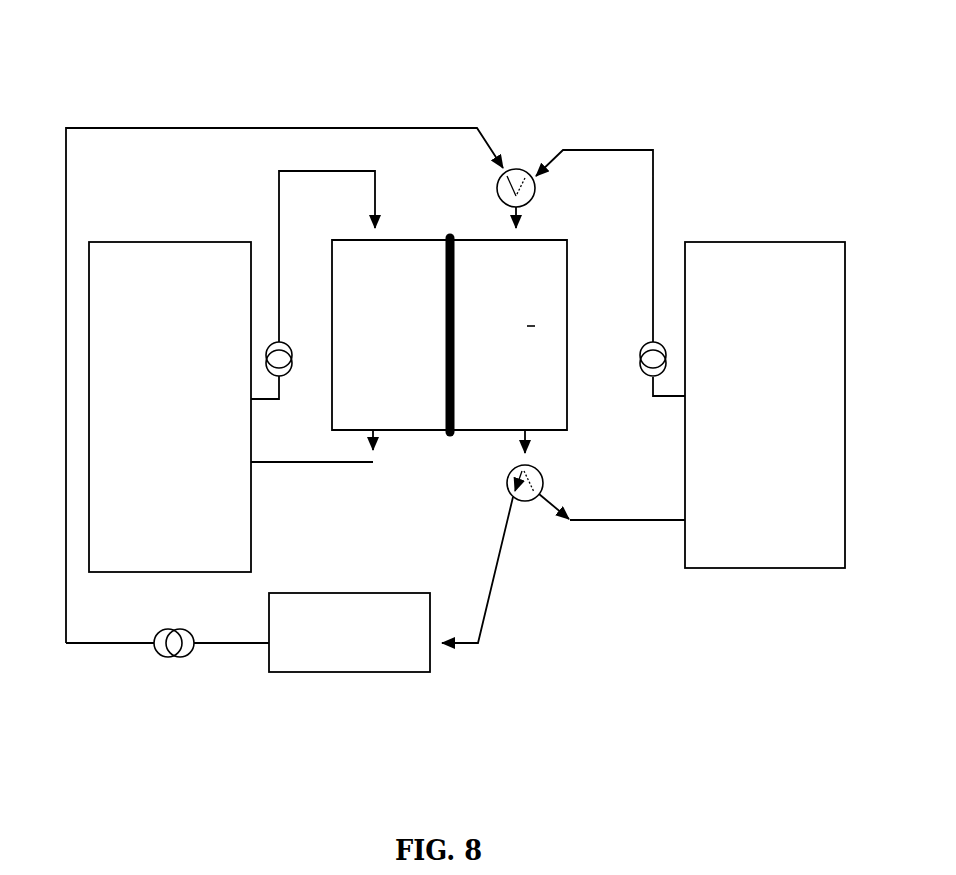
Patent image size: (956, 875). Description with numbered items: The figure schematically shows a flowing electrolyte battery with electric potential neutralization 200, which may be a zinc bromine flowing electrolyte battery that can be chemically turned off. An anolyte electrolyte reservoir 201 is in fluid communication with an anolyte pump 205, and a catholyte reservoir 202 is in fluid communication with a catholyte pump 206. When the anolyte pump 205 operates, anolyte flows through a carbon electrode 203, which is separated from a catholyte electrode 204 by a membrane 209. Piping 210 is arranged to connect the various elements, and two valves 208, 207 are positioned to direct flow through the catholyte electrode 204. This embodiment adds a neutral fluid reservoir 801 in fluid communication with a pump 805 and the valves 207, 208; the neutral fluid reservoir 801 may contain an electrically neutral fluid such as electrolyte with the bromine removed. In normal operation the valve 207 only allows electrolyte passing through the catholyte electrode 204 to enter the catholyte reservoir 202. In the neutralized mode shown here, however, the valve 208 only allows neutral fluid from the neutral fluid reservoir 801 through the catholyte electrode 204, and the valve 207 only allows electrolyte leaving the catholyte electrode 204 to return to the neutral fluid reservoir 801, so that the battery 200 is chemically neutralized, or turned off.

The flowing electrolyte battery with electric potential neutralization 200 is at (305, 68).
The anolyte electrolyte reservoir 201 is at (150, 500).
The catholyte reservoir 202 is at (753, 500).
The carbon electrode 203 is at (398, 402).
The catholyte electrode 204 is at (517, 402).
The anolyte pump 205 is at (291, 368).
The catholyte pump 206 is at (640, 365).
The valve 207 is at (525, 501).
The valve 208 is at (515, 169).
The membrane 209 is at (450, 433).
The piping 210 is at (268, 224).
The neutral fluid reservoir 801 is at (332, 663).
The pump 805 is at (183, 657).